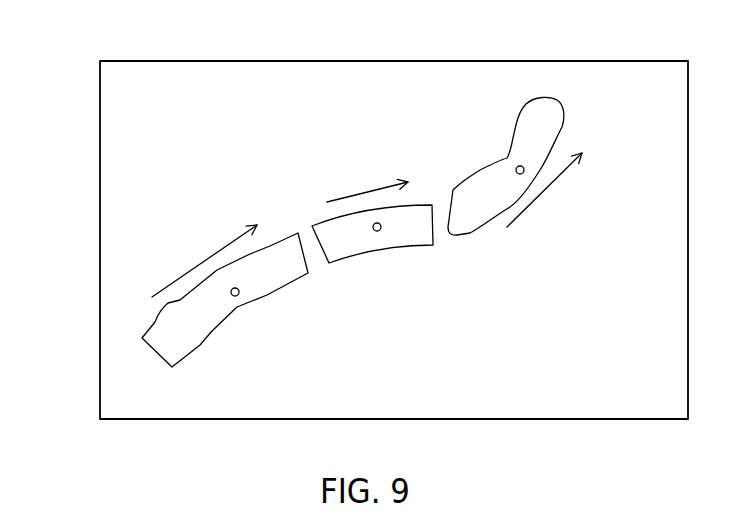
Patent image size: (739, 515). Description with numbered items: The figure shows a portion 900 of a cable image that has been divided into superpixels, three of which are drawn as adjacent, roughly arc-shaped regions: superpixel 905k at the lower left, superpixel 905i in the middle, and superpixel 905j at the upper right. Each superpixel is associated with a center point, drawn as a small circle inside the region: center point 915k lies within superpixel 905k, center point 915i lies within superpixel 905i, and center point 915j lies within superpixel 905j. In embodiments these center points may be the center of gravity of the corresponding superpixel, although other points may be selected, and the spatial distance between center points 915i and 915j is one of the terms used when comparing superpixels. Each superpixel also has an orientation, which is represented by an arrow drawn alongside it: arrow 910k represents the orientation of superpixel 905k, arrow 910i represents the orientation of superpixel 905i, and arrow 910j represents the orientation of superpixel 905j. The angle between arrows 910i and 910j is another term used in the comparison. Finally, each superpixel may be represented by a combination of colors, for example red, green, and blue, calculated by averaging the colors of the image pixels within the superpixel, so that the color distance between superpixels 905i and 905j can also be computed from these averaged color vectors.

The portion of a cable image 900 is at (168, 61).
The superpixel 905k is at (160, 332).
The arrow 910k is at (222, 250).
The center point 915k is at (237, 296).
The superpixel 905i is at (417, 247).
The arrow 910i is at (372, 190).
The center point 915i is at (375, 231).
The superpixel 905j is at (465, 182).
The arrow 910j is at (543, 195).
The center point 915j is at (517, 167).